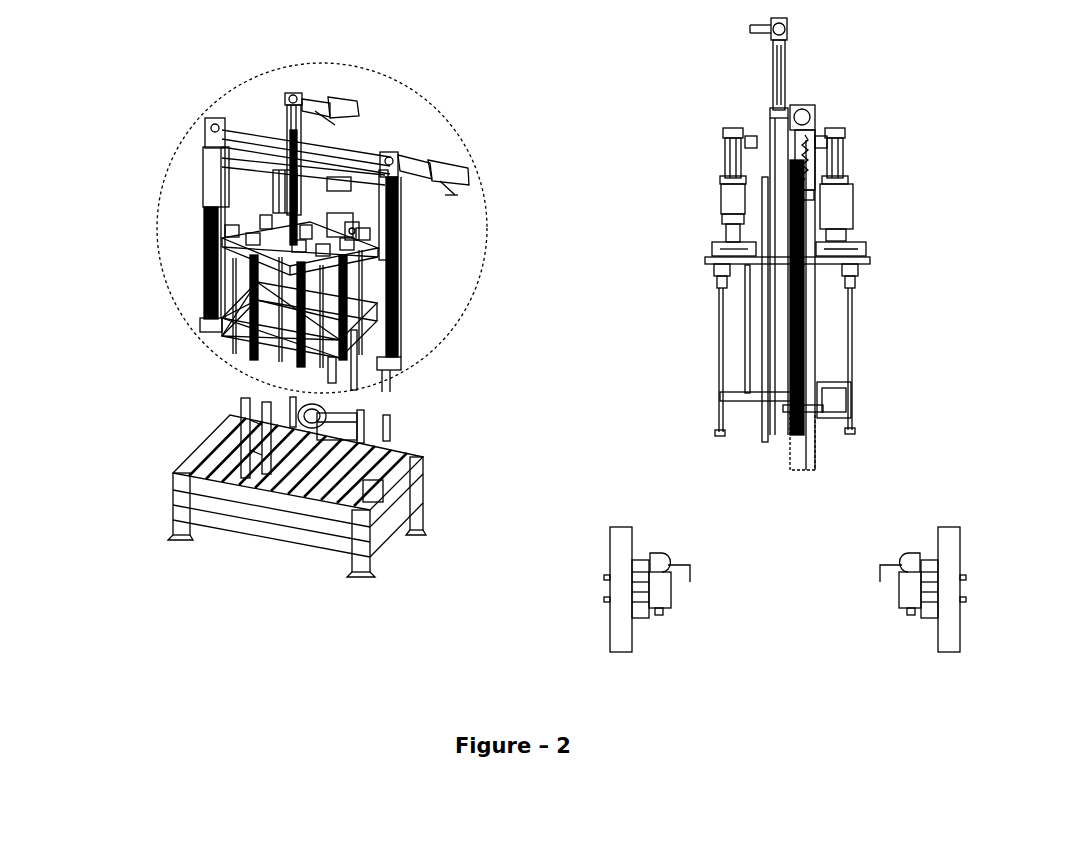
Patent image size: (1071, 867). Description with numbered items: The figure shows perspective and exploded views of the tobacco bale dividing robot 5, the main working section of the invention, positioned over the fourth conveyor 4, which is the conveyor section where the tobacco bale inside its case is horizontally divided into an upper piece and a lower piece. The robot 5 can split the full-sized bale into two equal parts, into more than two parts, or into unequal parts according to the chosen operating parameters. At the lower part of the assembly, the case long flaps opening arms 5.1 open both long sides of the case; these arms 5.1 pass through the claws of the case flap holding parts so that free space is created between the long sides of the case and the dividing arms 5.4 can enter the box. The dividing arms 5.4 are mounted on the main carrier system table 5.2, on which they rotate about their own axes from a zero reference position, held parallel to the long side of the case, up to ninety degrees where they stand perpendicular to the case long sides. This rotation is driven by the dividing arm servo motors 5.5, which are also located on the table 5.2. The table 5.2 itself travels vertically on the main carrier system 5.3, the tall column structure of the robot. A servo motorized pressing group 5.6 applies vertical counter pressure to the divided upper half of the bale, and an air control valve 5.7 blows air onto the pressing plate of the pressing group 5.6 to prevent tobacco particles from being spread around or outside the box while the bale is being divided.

The fourth conveyor 4 is at (243, 530).
The tobacco bale dividing robot 5 is at (489, 271).
The case long flaps opening arms 5.1 is at (318, 385).
The main carrier system table 5.2 is at (360, 248).
The main carrier system 5.3 is at (305, 118).
The dividing arms 5.4 is at (302, 371).
The dividing arm servo motors 5.5 is at (222, 232).
The servo motorized pressing group 5.6 is at (300, 300).
The air control valve 5.7 is at (240, 135).